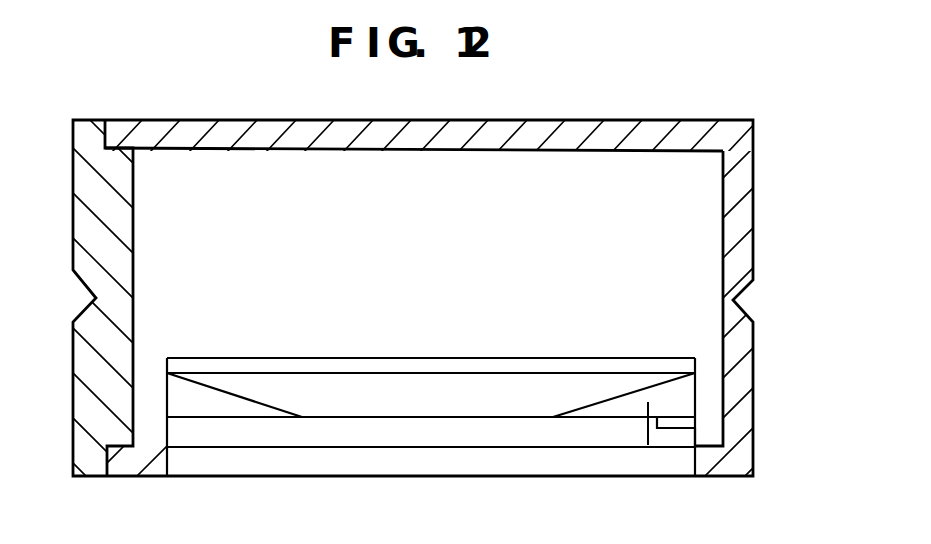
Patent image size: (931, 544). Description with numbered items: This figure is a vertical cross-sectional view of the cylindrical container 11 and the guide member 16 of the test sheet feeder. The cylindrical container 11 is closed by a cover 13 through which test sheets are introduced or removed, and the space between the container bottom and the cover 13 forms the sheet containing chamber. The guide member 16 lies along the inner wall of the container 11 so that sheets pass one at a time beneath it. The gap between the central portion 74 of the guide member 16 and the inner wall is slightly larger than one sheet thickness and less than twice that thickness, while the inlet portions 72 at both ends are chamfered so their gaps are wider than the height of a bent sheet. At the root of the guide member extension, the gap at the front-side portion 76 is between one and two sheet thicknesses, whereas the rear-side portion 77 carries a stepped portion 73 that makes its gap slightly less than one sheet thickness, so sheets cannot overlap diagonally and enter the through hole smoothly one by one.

The cylindrical container 11 is at (757, 370).
The cover 13 is at (84, 126).
The guide member 16 is at (692, 357).
The inlet portion 72 is at (648, 445).
The stepped portion 73 is at (690, 422).
The central portion 74 is at (458, 437).
The front-side portion 76 is at (216, 433).
The rear-side portion 77 is at (675, 438).